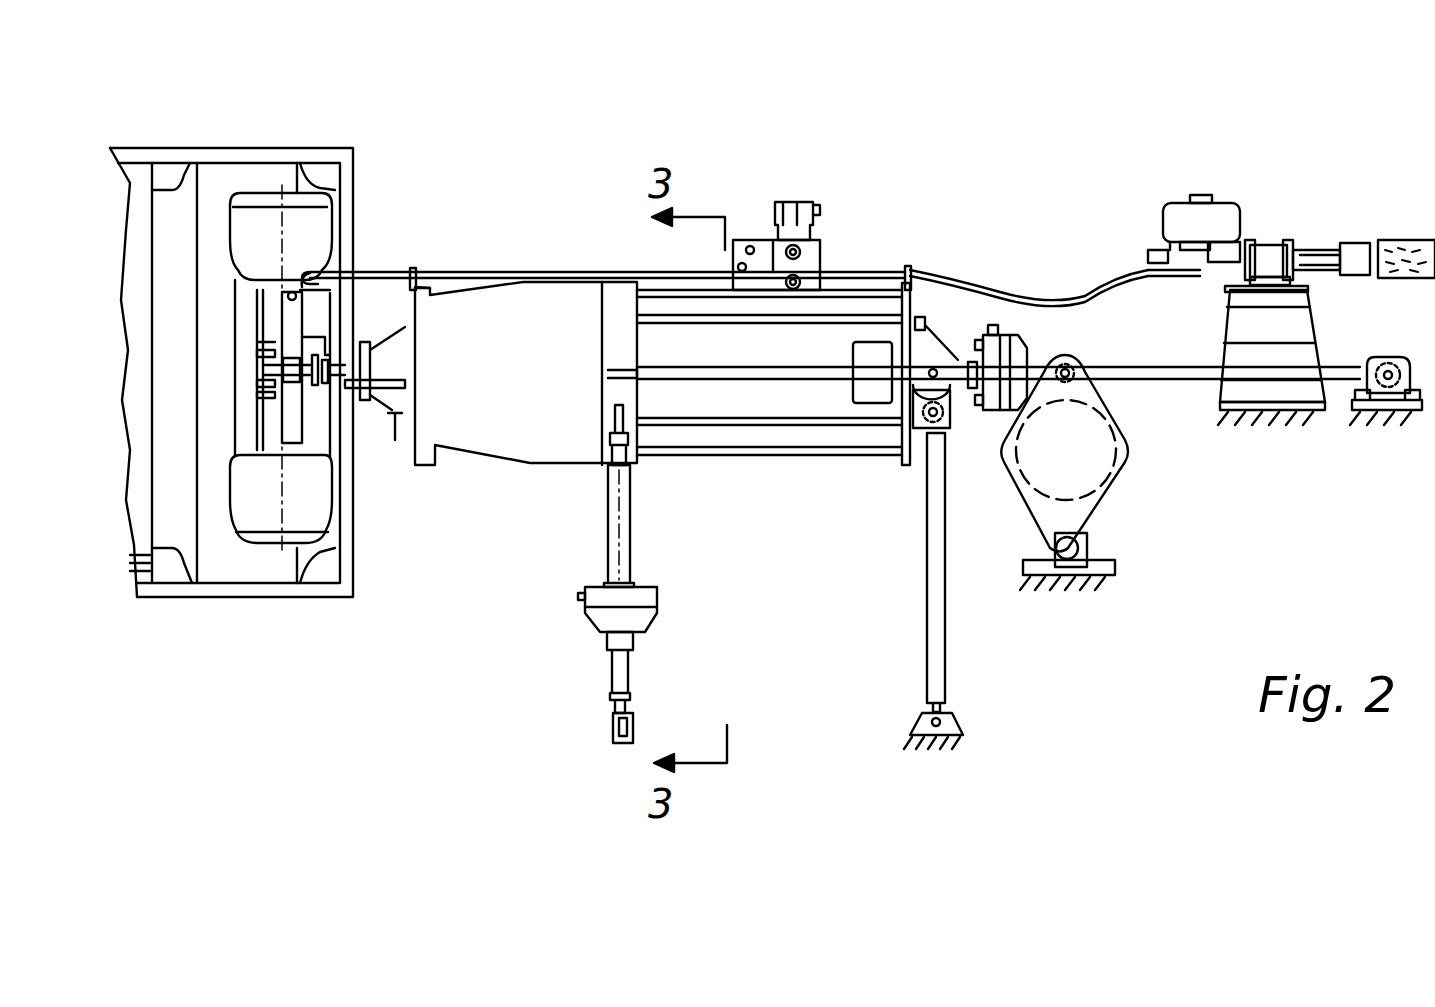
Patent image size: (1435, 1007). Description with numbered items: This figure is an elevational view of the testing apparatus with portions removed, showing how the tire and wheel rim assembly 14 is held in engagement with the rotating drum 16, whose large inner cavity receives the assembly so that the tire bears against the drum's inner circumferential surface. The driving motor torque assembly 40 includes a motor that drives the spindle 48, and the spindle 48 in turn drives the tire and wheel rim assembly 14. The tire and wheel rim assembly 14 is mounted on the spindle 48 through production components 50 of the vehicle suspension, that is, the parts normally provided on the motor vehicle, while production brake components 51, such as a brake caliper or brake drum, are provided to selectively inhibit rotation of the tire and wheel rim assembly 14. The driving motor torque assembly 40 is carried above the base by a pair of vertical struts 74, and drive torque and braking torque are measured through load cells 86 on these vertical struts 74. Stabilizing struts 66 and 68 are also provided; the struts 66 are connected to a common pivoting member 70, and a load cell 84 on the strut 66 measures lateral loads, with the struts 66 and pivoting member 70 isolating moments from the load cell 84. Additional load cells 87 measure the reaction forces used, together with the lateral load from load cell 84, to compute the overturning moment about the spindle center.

The rotating drum 16 is at (256, 148).
The tire and wheel rim assembly 14 is at (335, 197).
The production brake components 51 is at (338, 306).
The spindle 48 is at (463, 306).
The production components 50 is at (307, 388).
The driving motor torque assembly 40 is at (764, 452).
The stabilizing strut 68 is at (822, 360).
The load cells 87 is at (876, 342).
The load cell 84 is at (1013, 336).
The pivoting member 70 is at (1115, 493).
The stabilizing struts 66 is at (945, 592).
The vertical struts 74 is at (608, 525).
The load cells 86 is at (587, 623).